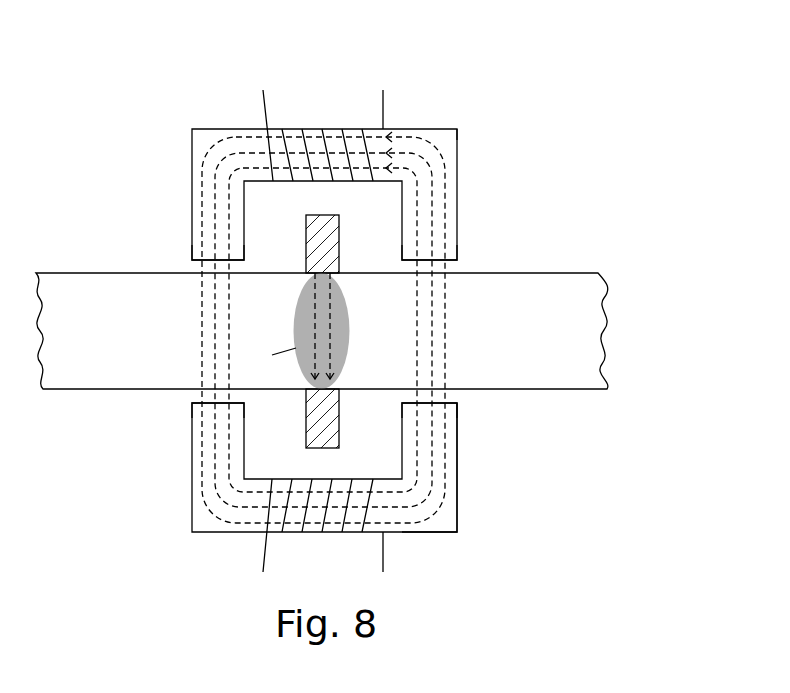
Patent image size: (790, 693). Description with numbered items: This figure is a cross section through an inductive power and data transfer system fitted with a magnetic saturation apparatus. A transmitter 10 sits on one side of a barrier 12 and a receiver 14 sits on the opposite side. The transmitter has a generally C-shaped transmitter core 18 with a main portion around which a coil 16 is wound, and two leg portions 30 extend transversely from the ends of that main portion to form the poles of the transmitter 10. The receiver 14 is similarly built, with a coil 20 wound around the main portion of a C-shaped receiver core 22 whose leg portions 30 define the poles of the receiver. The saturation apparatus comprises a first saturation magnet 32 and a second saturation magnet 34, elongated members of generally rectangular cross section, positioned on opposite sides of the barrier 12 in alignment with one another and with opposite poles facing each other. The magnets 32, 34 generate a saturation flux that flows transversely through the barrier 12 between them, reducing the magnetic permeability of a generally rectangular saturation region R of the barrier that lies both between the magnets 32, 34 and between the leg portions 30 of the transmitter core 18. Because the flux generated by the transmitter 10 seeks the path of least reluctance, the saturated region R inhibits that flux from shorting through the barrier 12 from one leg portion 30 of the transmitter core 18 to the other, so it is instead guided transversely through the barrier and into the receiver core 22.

The transmitter 10 is at (475, 111).
The barrier 12 is at (584, 303).
The receiver 14 is at (478, 521).
The coil 16 is at (342, 127).
The transmitter core 18 is at (228, 124).
The coil 20 is at (303, 537).
The receiver core 22 is at (220, 534).
The leg portions 30 is at (192, 230).
The first saturation magnet 32 is at (340, 233).
The second saturation magnet 34 is at (340, 423).
The saturation region R is at (270, 358).